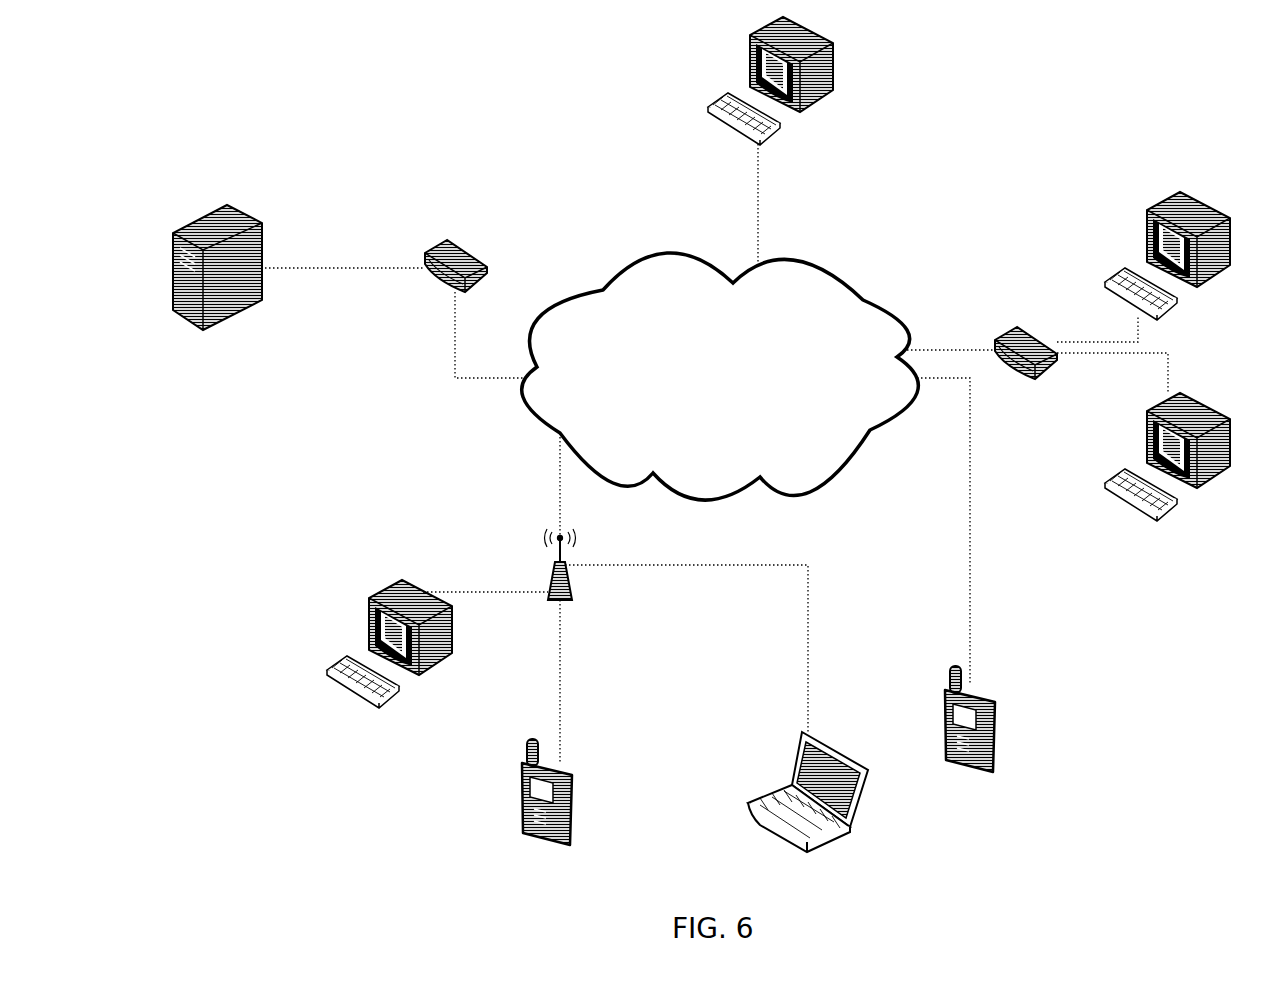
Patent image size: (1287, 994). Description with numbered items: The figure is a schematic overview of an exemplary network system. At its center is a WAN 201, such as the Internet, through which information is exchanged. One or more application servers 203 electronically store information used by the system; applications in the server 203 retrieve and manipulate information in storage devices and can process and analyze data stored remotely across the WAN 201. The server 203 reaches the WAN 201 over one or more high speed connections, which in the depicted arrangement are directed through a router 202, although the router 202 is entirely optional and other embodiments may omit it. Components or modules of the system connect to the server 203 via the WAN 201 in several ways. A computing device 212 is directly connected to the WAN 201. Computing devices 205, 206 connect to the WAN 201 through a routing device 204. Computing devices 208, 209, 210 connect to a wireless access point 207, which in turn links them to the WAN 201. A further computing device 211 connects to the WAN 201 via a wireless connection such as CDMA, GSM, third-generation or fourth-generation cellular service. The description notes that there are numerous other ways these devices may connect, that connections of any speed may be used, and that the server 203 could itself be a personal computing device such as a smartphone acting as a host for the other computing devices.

The WAN 201 is at (720, 390).
The router 202 is at (469, 277).
The application server 203 is at (226, 271).
The routing device 204 is at (1018, 370).
The computing device 205 is at (1167, 263).
The computing device 206 is at (1167, 465).
The wireless access point 207 is at (580, 570).
The computing device 208 is at (389, 647).
The computing device 209 is at (555, 814).
The computing device 210 is at (812, 802).
The computing device 211 is at (984, 740).
The computing device 212 is at (780, 81).